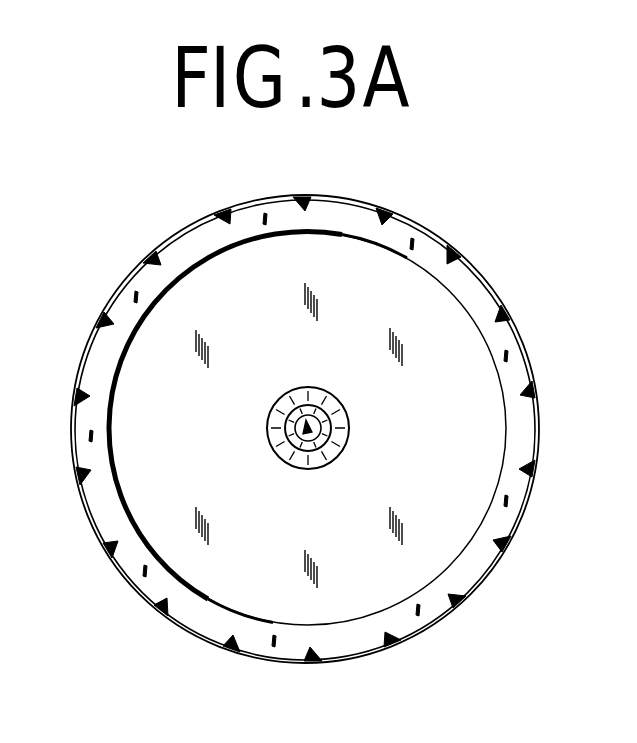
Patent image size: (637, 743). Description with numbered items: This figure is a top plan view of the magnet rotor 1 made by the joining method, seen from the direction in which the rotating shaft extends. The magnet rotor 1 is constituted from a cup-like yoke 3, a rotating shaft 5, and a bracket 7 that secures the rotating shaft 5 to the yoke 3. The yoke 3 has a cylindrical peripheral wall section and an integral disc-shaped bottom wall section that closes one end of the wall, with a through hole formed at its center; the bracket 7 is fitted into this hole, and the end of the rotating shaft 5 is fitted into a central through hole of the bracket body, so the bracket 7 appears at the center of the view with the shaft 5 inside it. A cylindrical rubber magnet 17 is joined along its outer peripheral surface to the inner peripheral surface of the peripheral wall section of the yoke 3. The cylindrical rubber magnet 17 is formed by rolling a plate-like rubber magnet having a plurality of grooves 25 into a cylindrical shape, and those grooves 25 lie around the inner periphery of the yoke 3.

The magnet rotor 1 is at (552, 418).
The cup-like yoke 3 is at (470, 262).
The rotating shaft 5 is at (308, 428).
The bracket 7 is at (347, 447).
The cylindrical rubber magnet 17 is at (98, 371).
The grooves 25 is at (505, 542).